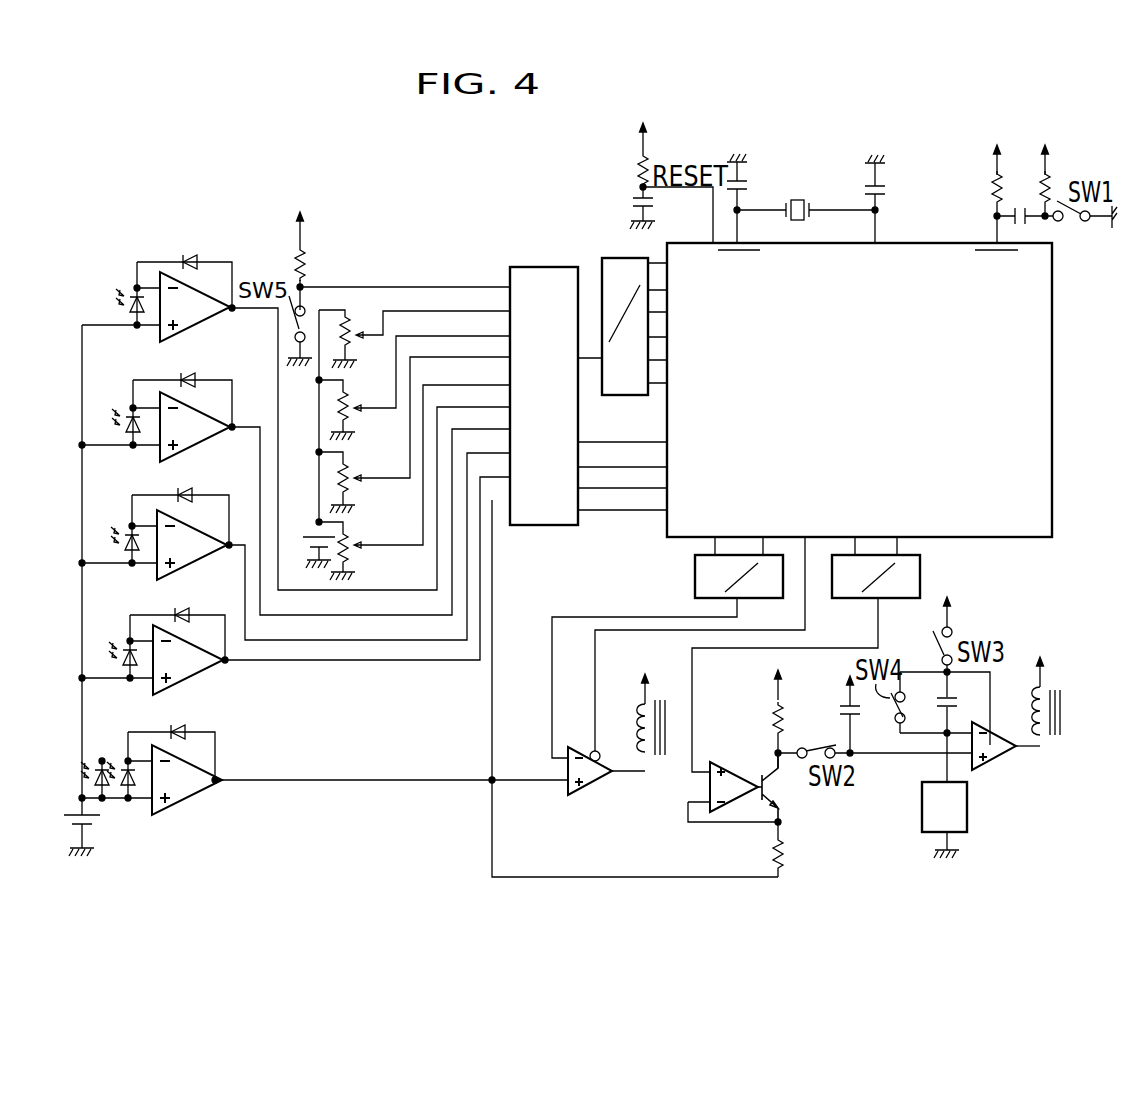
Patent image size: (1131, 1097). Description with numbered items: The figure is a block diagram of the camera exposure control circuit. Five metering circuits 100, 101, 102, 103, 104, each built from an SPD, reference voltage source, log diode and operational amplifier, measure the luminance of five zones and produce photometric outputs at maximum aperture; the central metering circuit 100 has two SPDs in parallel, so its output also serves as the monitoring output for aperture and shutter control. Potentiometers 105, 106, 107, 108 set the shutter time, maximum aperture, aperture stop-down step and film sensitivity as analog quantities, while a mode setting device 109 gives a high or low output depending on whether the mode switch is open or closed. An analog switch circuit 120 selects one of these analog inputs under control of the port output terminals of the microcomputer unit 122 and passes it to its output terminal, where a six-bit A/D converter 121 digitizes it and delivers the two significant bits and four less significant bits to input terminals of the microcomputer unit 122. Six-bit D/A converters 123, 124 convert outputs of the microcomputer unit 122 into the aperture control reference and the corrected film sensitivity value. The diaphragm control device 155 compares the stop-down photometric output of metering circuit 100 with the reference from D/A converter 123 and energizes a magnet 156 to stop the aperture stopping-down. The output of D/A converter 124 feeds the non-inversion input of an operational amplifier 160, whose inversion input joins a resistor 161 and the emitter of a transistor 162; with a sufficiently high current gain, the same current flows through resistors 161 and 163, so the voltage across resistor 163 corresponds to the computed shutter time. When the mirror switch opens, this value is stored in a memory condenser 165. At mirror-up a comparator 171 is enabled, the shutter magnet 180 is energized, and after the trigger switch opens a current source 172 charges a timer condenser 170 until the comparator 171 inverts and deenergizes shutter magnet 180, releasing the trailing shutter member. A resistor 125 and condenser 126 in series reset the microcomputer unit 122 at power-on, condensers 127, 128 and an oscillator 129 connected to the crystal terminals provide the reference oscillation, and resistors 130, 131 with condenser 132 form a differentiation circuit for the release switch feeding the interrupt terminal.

The metering circuit 100 is at (199, 806).
The metering circuit 101 is at (207, 698).
The metering circuit 102 is at (208, 586).
The metering circuit 103 is at (217, 466).
The metering circuit 104 is at (213, 350).
The potentiometer 105 is at (384, 552).
The potentiometer 106 is at (380, 484).
The potentiometer 107 is at (378, 413).
The potentiometer 108 is at (370, 342).
The mode setting device 109 is at (316, 287).
The analog switch circuit 120 is at (558, 267).
The 6-bit A/D converter 121 is at (638, 258).
The microcomputer unit 122 is at (666, 536).
The 6-bit D/A converter 123 is at (693, 578).
The 6-bit D/A converter 124 is at (948, 564).
The resistor 125 is at (637, 178).
The condenser 126 is at (636, 200).
The condenser 127 is at (745, 178).
The condenser 128 is at (884, 181).
The oscillator 129 is at (812, 222).
The resistor 130 is at (1007, 181).
The resistor 131 is at (1050, 178).
The condenser 132 is at (1032, 222).
The diaphragm control device 155 is at (585, 800).
The magnet 156 is at (650, 778).
The operational amplifier 160 is at (729, 773).
The resistor 161 is at (795, 848).
The transistor 162 is at (786, 788).
The resistor 163 is at (780, 728).
The memory condenser 165 is at (861, 716).
The timer condenser 170 is at (958, 703).
The comparator 171 is at (1006, 758).
The current source 172 is at (999, 848).
The shutter magnet 180 is at (1062, 715).